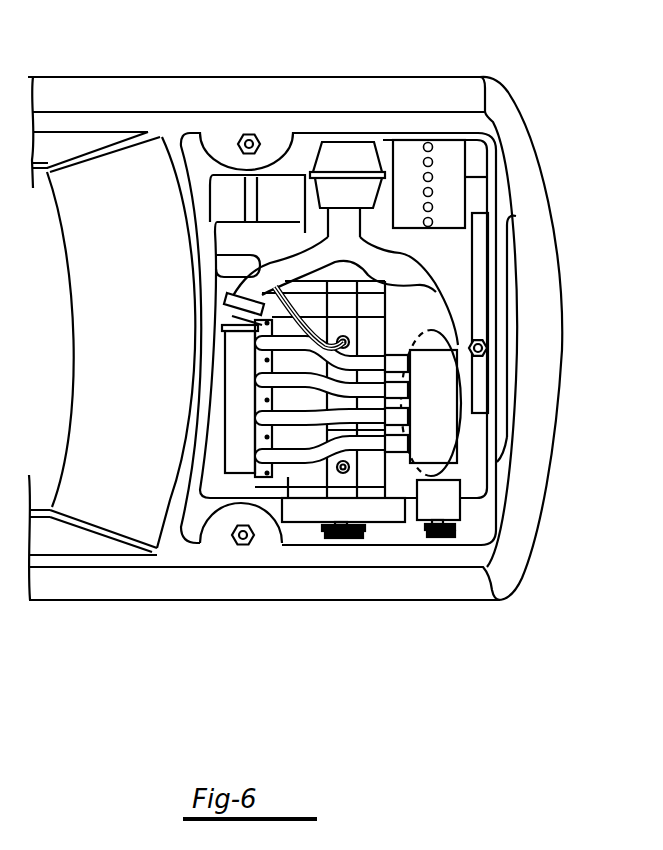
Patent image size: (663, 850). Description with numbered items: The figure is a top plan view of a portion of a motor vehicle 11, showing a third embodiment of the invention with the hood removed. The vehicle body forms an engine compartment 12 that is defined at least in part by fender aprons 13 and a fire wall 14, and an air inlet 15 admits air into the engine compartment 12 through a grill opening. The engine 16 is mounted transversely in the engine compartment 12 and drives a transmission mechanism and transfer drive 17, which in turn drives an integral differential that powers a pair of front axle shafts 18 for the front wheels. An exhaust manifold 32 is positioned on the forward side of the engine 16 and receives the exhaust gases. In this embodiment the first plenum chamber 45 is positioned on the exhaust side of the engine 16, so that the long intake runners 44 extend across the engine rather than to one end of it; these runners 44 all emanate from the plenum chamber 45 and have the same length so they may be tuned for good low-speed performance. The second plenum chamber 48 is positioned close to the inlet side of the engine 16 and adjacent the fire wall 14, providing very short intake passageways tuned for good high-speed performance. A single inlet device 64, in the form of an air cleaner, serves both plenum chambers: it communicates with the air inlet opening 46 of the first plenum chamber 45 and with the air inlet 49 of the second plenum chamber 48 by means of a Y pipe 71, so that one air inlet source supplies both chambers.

The motor vehicle 11 is at (463, 73).
The engine compartment 12 is at (483, 200).
The fender aprons 13 is at (303, 150).
The fire wall 14 is at (207, 436).
The air inlet 15 is at (517, 347).
The engine 16 is at (303, 523).
The transmission mechanism and transfer drive 17 is at (381, 289).
The front axle shafts 18 is at (250, 192).
The exhaust manifold 32 is at (445, 477).
The manifold extension 44 is at (330, 445).
The first plenum chamber 45 is at (445, 453).
The air inlet opening 46 is at (517, 273).
The second plenum chamber 48 is at (235, 389).
The air inlet 49 is at (222, 312).
The inlet device 64 is at (360, 148).
The Y pipe 71 is at (264, 264).